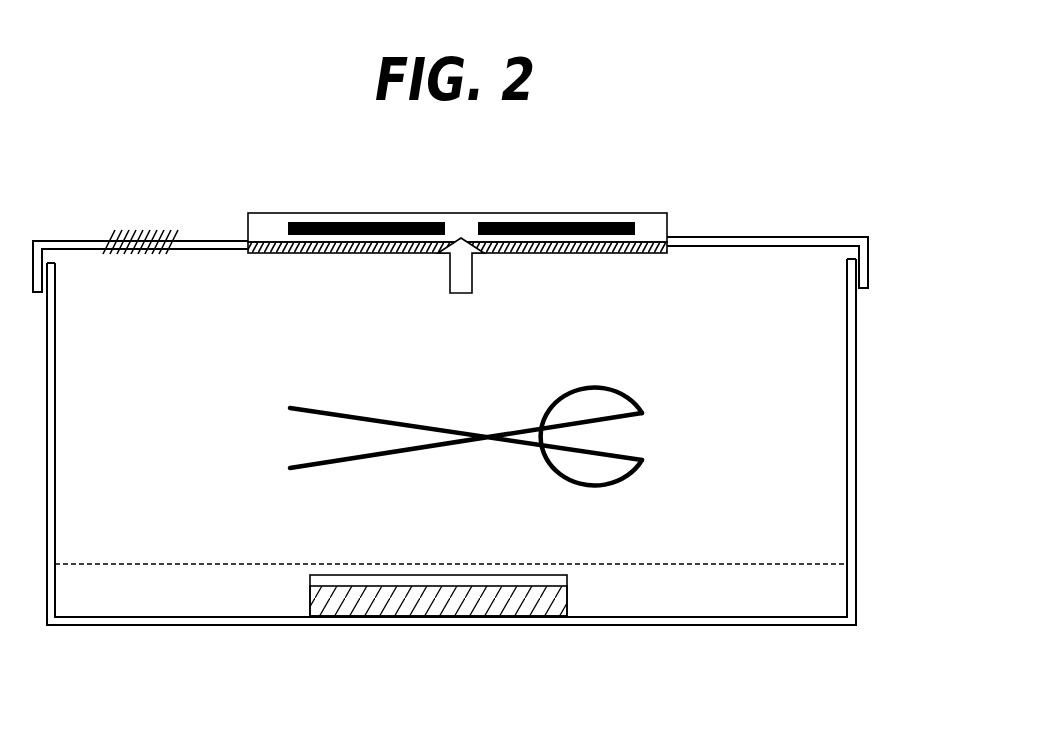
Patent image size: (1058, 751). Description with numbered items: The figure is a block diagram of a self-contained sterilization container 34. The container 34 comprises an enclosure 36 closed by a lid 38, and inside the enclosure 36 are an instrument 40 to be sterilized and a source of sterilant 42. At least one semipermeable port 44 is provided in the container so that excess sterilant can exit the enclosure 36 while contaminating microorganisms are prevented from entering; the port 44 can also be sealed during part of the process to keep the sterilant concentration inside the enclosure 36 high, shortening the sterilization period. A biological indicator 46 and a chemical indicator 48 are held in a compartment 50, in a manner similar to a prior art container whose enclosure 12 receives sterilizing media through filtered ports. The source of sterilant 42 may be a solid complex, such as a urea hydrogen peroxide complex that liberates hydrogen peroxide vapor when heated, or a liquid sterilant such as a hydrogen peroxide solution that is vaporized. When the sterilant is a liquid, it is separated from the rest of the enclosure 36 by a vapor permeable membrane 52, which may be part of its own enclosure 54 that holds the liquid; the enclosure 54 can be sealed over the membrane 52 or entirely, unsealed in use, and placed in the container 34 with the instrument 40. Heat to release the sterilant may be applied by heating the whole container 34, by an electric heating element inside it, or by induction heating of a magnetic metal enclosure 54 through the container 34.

The enclosure 12 is at (490, 493).
The self-contained sterilization container 34 is at (668, 638).
The enclosure 36 is at (855, 405).
The lid 38 is at (450, 255).
The instrument 40 is at (427, 448).
The source of sterilant 42 is at (440, 595).
The semipermeable port 44 is at (132, 268).
The biological indicator 46 is at (417, 221).
The chemical indicator 48 is at (623, 221).
The compartment 50 is at (492, 222).
The vapor permeable membrane 52 is at (723, 562).
The enclosure 54 is at (310, 600).